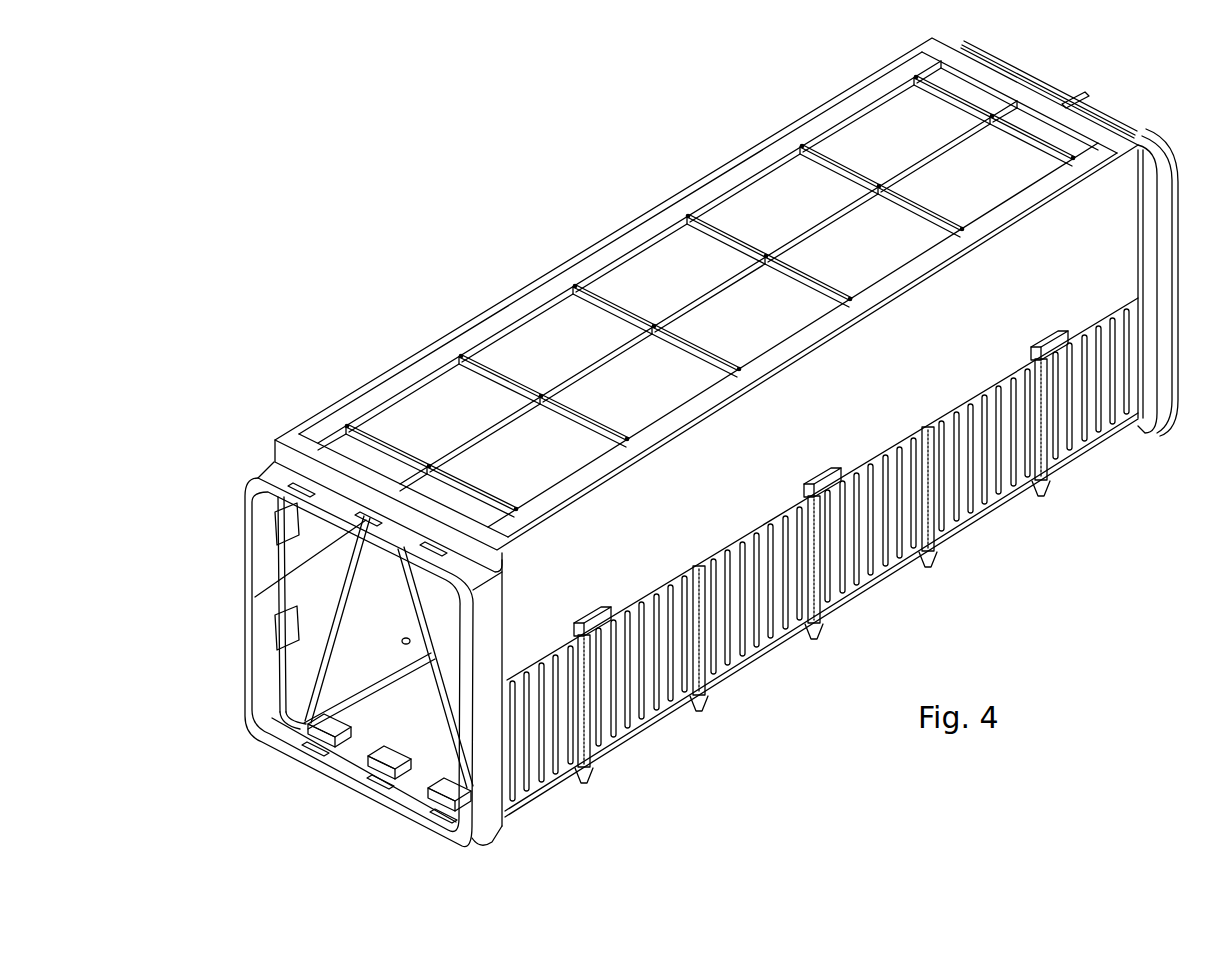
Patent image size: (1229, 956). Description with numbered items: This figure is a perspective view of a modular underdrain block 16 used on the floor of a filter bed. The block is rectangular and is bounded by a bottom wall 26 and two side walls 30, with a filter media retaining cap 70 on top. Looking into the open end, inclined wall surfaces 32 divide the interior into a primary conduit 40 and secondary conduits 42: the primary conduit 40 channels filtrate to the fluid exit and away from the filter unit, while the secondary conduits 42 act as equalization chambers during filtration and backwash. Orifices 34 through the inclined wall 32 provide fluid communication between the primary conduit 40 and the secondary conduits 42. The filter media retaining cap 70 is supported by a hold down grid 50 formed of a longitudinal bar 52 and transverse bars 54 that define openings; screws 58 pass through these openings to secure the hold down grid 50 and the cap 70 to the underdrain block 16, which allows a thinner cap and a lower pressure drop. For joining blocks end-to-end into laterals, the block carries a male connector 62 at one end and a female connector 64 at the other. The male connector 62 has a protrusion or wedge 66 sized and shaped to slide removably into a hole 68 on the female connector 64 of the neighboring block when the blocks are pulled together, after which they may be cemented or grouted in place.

The modular underdrain block 16 is at (699, 443).
The bottom wall 26 is at (430, 770).
The side wall 30 is at (828, 428).
The inclined wall surface 32 is at (440, 703).
The orifice 34 is at (404, 640).
The primary conduit 40 is at (386, 652).
The secondary conduit 42 is at (330, 597).
The hold down grid 50 is at (603, 257).
The longitudinal bar 52 is at (700, 297).
The transverse bar 54 is at (830, 183).
The screw 58 is at (350, 428).
The male connector 62 is at (1163, 205).
The female connector 64 is at (263, 531).
The protrusion 66 is at (1073, 100).
The hole 68 is at (507, 510).
The filter media retaining cap 70 is at (417, 417).